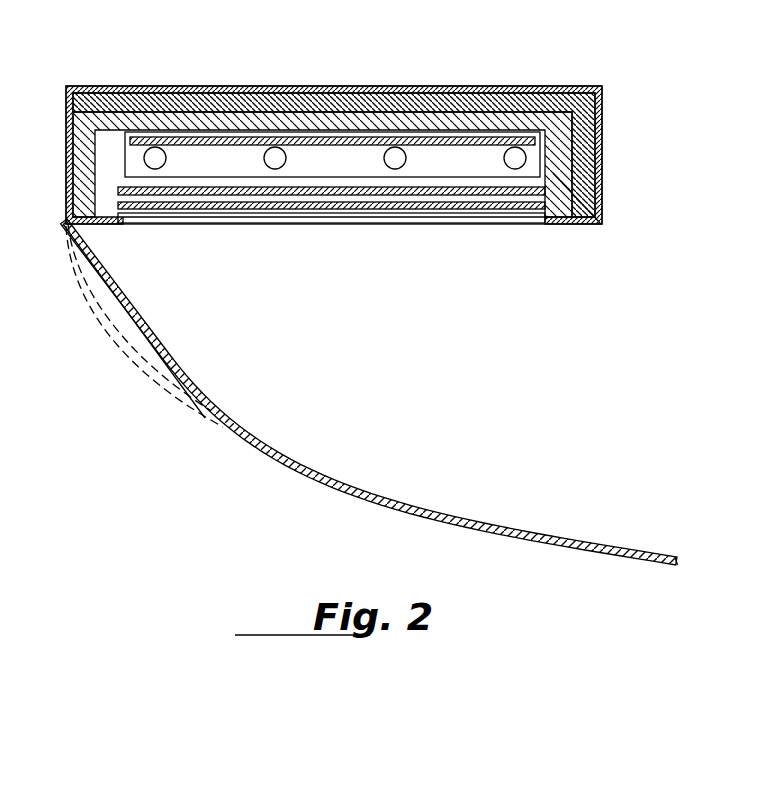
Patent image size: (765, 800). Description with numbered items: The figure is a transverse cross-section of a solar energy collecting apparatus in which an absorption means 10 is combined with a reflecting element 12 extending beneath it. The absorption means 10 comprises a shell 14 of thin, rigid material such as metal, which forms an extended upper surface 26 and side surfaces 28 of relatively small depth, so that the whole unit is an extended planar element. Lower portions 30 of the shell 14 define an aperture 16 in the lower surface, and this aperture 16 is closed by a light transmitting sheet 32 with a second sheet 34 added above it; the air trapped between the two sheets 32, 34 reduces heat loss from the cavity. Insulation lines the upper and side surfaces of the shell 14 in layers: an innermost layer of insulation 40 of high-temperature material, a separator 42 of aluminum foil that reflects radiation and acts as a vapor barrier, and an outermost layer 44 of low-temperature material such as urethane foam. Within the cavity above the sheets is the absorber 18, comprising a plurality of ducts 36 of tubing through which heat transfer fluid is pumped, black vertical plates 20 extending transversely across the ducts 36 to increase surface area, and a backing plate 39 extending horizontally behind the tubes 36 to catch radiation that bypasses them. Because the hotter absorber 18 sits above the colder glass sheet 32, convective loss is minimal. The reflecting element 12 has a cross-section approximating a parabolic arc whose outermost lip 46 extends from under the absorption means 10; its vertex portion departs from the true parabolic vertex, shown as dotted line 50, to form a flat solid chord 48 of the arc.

The absorption means 10 is at (106, 78).
The reflecting element 12 is at (316, 485).
The shell 14 is at (608, 117).
The aperture 16 is at (460, 224).
The absorber 18 is at (200, 180).
The black vertical plates 20 is at (222, 162).
The upper surface 26 is at (505, 86).
The side surfaces 28 is at (607, 163).
The lower portions 30 is at (560, 233).
The light transmitting sheet 32 is at (418, 224).
The second sheet 34 is at (350, 224).
The ducts 36 is at (290, 160).
The backing plate 39 is at (244, 140).
The innermost layer of insulation 40 is at (572, 180).
The separator 42 is at (573, 202).
The outermost layer 44 is at (589, 218).
The outermost lip 46 is at (660, 568).
The chord 48 is at (167, 334).
The dotted line 50 is at (120, 363).